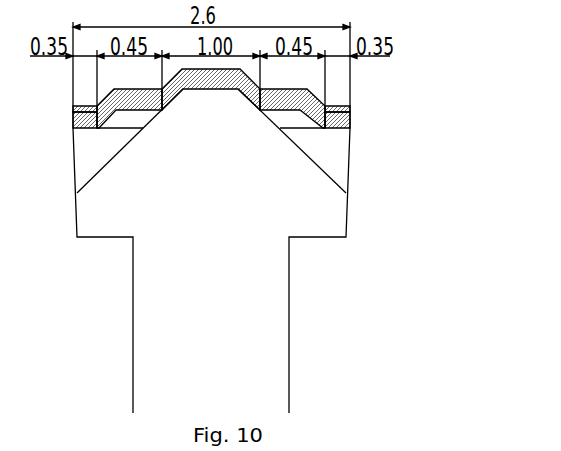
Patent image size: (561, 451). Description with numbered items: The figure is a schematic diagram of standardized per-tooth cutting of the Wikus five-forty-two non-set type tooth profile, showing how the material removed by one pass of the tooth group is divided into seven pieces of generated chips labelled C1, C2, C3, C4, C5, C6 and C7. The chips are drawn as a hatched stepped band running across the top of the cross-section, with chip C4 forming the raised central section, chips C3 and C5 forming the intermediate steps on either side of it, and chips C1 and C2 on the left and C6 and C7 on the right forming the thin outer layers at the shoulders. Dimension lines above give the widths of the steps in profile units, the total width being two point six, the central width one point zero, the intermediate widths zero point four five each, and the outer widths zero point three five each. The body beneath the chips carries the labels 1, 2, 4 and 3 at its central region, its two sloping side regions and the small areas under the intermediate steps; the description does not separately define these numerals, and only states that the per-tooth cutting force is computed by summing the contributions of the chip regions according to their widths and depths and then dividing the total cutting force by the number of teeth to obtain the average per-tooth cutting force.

The substrate body 1 is at (211, 270).
The side edge portion 2 is at (130, 141).
The side edge portion 4 is at (292, 141).
The intermediate region 3 is at (211, 118).
The generated chip C1 is at (77, 128).
The generated chip C2 is at (73, 106).
The generated chip C3 is at (129, 106).
The generated chip C4 is at (211, 88).
The generated chip C5 is at (292, 106).
The generated chip C6 is at (350, 110).
The generated chip C7 is at (350, 128).